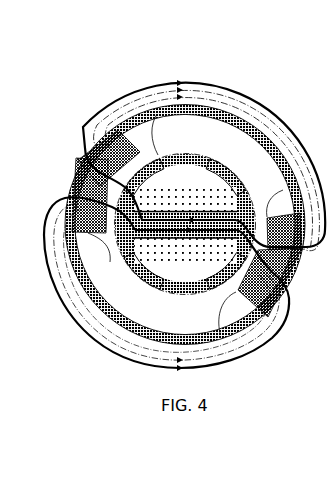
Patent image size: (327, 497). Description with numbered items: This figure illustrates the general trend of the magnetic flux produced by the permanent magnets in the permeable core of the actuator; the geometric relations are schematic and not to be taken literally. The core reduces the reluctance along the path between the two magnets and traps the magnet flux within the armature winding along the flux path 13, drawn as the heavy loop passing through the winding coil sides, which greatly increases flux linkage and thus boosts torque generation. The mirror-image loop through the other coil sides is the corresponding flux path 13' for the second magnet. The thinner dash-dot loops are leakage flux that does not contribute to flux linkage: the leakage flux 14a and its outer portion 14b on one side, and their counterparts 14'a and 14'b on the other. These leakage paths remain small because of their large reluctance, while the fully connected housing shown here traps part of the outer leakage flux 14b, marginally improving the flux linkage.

The flux path 13 is at (181, 163).
The second coil winding 13' is at (163, 267).
The first winding turns of first coil 14a is at (140, 98).
The leakage flux 14b is at (242, 107).
The first winding turns of second coil 14'a is at (167, 283).
The coil sides of second coil 14'b is at (173, 263).